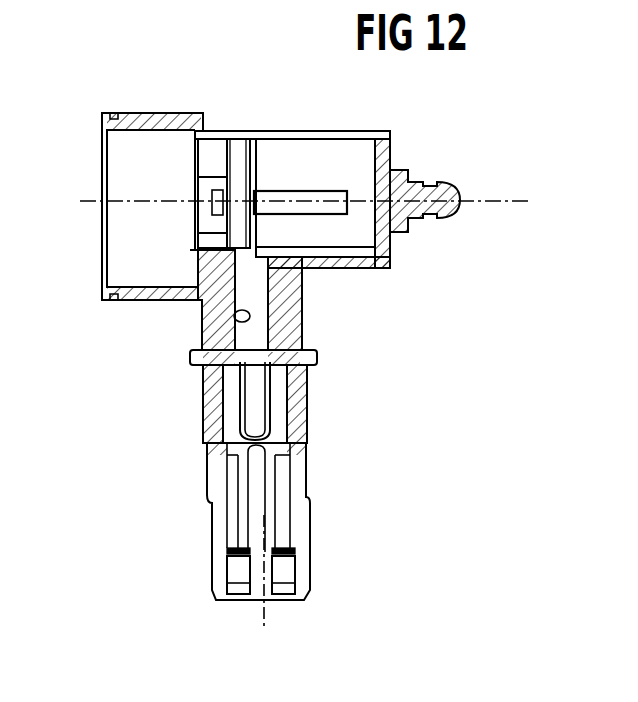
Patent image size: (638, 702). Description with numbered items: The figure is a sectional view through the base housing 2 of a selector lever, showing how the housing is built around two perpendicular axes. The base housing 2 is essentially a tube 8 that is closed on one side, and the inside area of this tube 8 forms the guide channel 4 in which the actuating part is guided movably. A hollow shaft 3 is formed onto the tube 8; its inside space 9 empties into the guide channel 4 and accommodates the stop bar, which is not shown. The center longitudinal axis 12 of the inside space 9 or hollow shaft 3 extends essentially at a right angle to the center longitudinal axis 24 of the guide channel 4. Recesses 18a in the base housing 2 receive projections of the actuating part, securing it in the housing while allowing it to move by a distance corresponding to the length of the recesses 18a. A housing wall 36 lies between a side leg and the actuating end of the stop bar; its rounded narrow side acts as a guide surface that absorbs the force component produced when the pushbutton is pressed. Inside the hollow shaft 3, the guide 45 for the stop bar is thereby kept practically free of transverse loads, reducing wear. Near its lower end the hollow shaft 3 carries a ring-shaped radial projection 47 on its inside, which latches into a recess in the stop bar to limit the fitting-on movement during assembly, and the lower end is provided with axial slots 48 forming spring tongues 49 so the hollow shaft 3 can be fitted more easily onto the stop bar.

The base housing 2 is at (407, 323).
The hollow shaft 3 is at (312, 552).
The guide channel 4 is at (287, 148).
The tube 8 is at (163, 113).
The inside space 9 is at (308, 463).
The center longitudinal axis 12 is at (265, 618).
The recesses 18a is at (337, 147).
The center longitudinal axis 24 is at (473, 201).
The housing wall 36 is at (237, 150).
The guide 45 is at (240, 322).
The ring-shaped radial projection 47 is at (227, 570).
The axial slots 48 is at (258, 482).
The spring tongues 49 is at (302, 490).